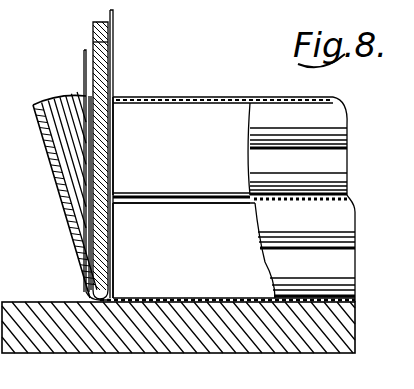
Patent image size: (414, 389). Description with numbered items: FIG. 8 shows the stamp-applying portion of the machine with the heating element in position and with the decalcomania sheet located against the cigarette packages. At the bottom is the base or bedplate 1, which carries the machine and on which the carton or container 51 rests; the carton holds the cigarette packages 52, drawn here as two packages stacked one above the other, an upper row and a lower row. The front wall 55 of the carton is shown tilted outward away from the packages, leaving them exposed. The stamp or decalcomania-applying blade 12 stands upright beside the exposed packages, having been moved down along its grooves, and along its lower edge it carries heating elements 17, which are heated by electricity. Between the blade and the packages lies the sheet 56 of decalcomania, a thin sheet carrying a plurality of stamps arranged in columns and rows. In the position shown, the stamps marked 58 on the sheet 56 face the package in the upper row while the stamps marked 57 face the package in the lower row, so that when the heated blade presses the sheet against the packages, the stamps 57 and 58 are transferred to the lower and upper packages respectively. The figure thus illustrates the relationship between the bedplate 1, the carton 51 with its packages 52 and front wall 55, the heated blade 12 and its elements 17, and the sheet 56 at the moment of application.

The base or bedplate 1 is at (337, 322).
The stamp or decalcomania-applying blade 12 is at (93, 28).
The heating elements 17 is at (92, 96).
The carton or container 51 is at (213, 303).
The cigarette packages 52 is at (218, 171).
The front wall 55 is at (67, 218).
The sheet 56 is at (120, 36).
The stamps 57 is at (114, 237).
The stamps 58 is at (114, 142).